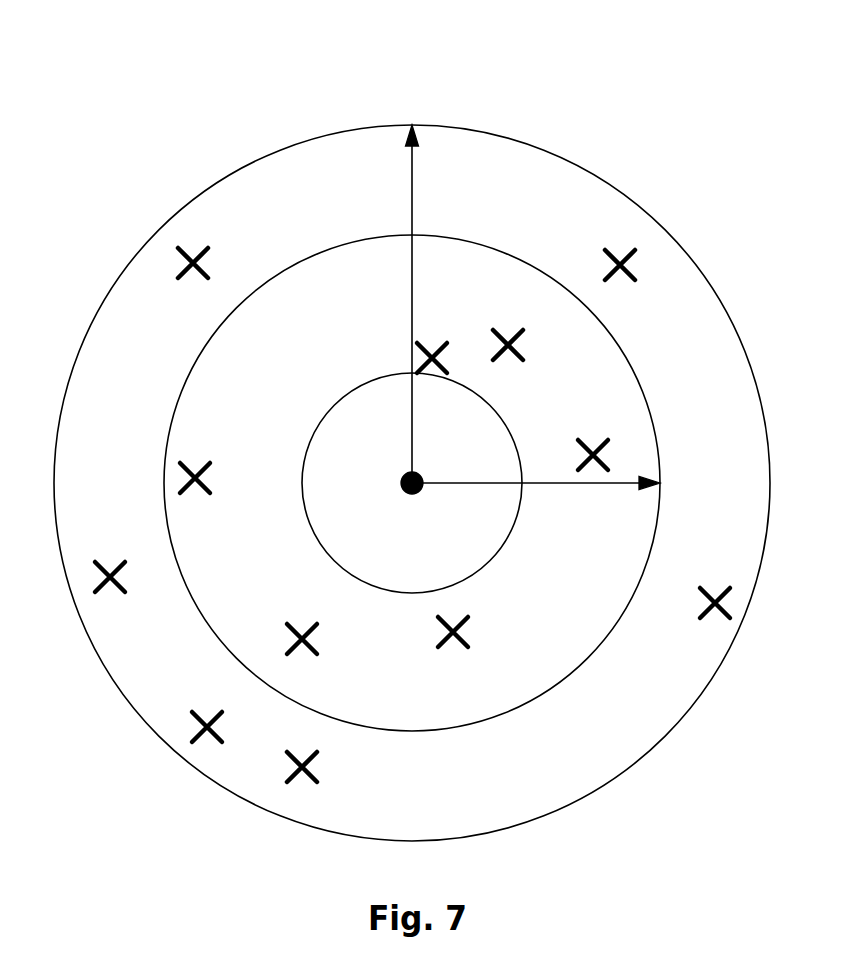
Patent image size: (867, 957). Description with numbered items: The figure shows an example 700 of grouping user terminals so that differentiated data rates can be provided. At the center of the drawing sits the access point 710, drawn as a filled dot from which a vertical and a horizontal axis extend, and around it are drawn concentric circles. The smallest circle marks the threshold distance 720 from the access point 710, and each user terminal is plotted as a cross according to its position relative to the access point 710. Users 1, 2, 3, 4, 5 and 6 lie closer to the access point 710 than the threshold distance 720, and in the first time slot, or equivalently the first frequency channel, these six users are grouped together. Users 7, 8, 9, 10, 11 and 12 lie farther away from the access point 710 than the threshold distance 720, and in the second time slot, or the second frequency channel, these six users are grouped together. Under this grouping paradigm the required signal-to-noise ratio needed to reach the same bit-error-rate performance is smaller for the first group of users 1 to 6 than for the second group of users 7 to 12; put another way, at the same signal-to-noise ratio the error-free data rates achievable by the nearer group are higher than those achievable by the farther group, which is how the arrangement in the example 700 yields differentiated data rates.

The example of grouping user terminals 700 is at (158, 122).
The access point 710 is at (403, 476).
The threshold distance 720 is at (560, 483).
The user 1 is at (593, 443).
The user 2 is at (507, 333).
The user 3 is at (432, 347).
The user 4 is at (195, 467).
The user 5 is at (302, 627).
The user 6 is at (453, 619).
The user 7 is at (616, 252).
The user 8 is at (193, 250).
The user 9 is at (110, 563).
The user 10 is at (207, 709).
The user 11 is at (302, 748).
The user 12 is at (715, 591).